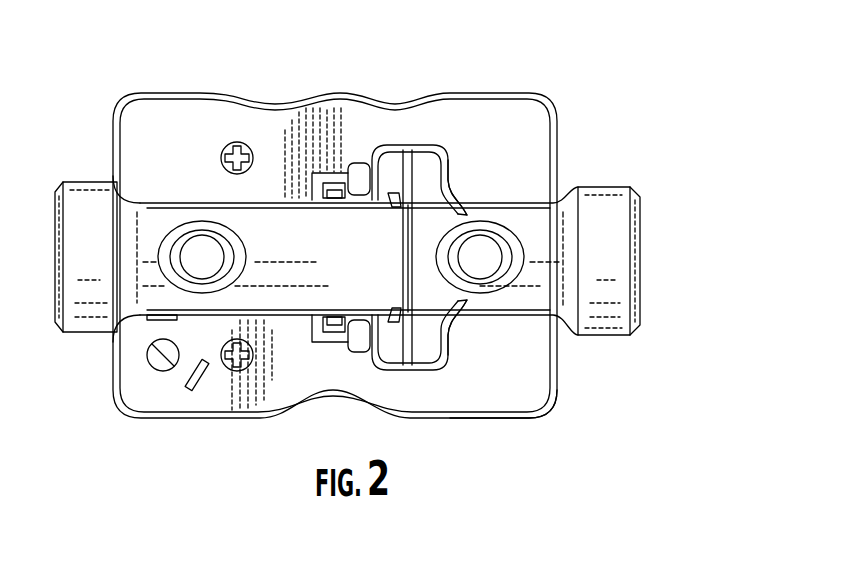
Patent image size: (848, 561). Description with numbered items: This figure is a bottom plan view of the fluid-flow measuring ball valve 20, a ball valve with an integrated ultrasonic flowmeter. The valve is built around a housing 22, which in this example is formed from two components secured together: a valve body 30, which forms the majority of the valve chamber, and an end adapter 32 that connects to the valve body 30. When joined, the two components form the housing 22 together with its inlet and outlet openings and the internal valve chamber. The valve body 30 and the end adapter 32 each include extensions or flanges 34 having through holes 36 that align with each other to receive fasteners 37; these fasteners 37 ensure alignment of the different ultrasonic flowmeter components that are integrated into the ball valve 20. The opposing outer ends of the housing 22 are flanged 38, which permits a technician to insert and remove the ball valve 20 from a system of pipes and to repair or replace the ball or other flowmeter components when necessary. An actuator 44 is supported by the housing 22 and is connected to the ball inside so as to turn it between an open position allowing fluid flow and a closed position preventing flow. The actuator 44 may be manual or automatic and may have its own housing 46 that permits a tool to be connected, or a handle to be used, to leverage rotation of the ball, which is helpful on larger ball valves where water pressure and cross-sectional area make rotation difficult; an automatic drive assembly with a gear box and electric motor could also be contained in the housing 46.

The fluid-flow measuring ball valve 20 is at (683, 77).
The housing 22 is at (635, 383).
The valve body 30 is at (147, 203).
The end adapter 32 is at (462, 208).
The flanges 34 is at (423, 165).
The through holes 36 is at (443, 177).
The fasteners 37 is at (363, 180).
The flanged outer ends 38 is at (92, 330).
The actuator 44 is at (220, 432).
The housing 46 is at (522, 418).